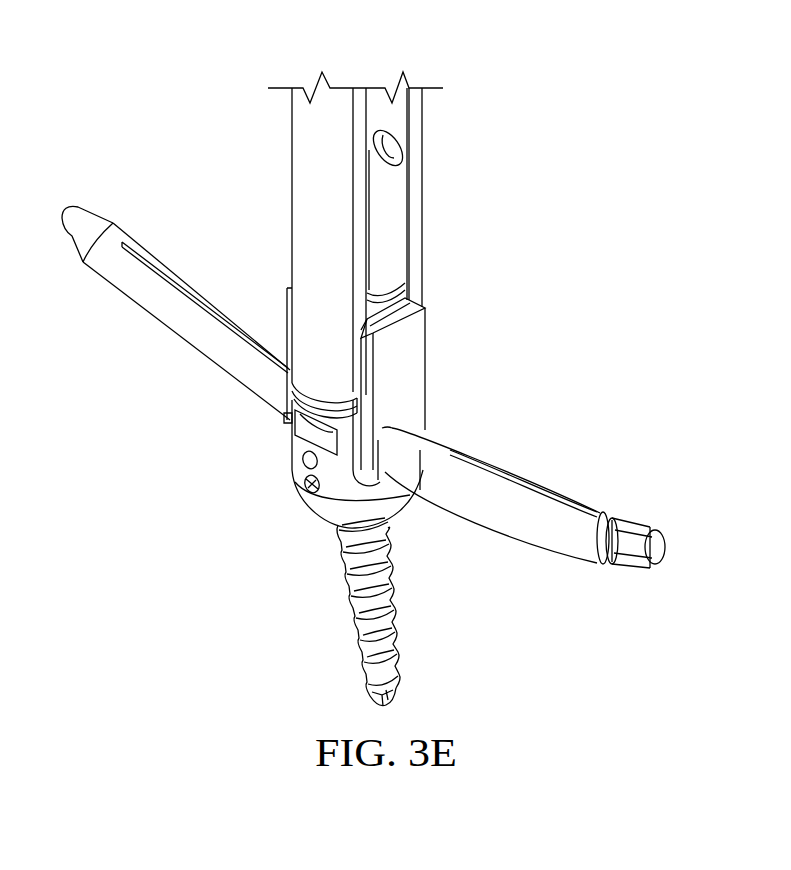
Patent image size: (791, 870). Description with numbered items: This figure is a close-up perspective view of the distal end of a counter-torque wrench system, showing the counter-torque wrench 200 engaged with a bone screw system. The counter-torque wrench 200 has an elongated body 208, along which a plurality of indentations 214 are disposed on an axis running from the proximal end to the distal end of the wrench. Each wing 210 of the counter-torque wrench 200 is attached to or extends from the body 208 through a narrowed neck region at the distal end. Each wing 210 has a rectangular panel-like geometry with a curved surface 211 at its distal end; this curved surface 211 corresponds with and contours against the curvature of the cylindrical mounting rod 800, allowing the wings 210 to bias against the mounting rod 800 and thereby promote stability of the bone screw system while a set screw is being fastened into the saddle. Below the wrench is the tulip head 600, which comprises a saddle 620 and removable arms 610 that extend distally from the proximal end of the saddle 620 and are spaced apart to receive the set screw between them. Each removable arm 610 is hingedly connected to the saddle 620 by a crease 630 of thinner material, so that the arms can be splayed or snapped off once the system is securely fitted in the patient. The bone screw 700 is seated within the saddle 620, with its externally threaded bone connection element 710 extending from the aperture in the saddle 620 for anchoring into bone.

The counter-torque wrench 200 is at (418, 60).
The body 208 is at (398, 205).
The wing 210 is at (425, 372).
The curved surface 211 is at (394, 452).
The indentation 214 is at (396, 152).
The tulip head 600 is at (258, 470).
The removable arm 610 is at (291, 162).
The saddle 620 is at (308, 515).
The crease 630 is at (300, 383).
The bone screw 700 is at (418, 608).
The bone connection element 710 is at (350, 607).
The mounting rod 800 is at (602, 573).